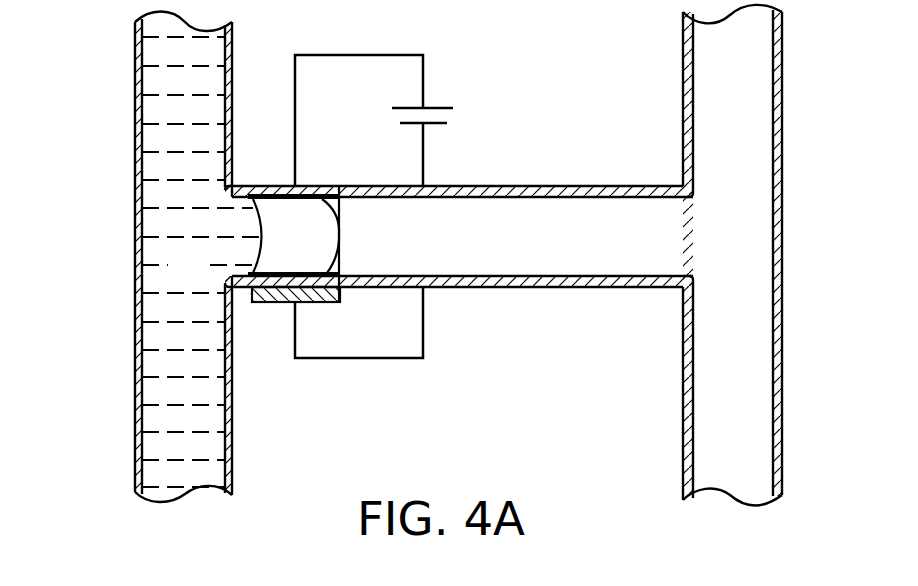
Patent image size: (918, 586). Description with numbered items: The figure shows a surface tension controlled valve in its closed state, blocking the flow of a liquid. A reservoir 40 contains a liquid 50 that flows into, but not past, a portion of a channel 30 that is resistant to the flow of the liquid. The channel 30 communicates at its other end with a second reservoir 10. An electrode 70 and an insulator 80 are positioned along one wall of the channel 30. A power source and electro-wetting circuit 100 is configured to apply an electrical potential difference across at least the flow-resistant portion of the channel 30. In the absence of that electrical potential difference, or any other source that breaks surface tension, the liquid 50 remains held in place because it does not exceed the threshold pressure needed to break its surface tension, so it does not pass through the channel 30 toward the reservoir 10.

The reservoir 10 is at (779, 107).
The channel 30 is at (510, 186).
The reservoir 40 is at (135, 120).
The liquid 50 is at (204, 282).
The electrode 70 is at (271, 303).
The insulator 80 is at (341, 245).
The power source and electro-wetting circuit 100 is at (432, 82).